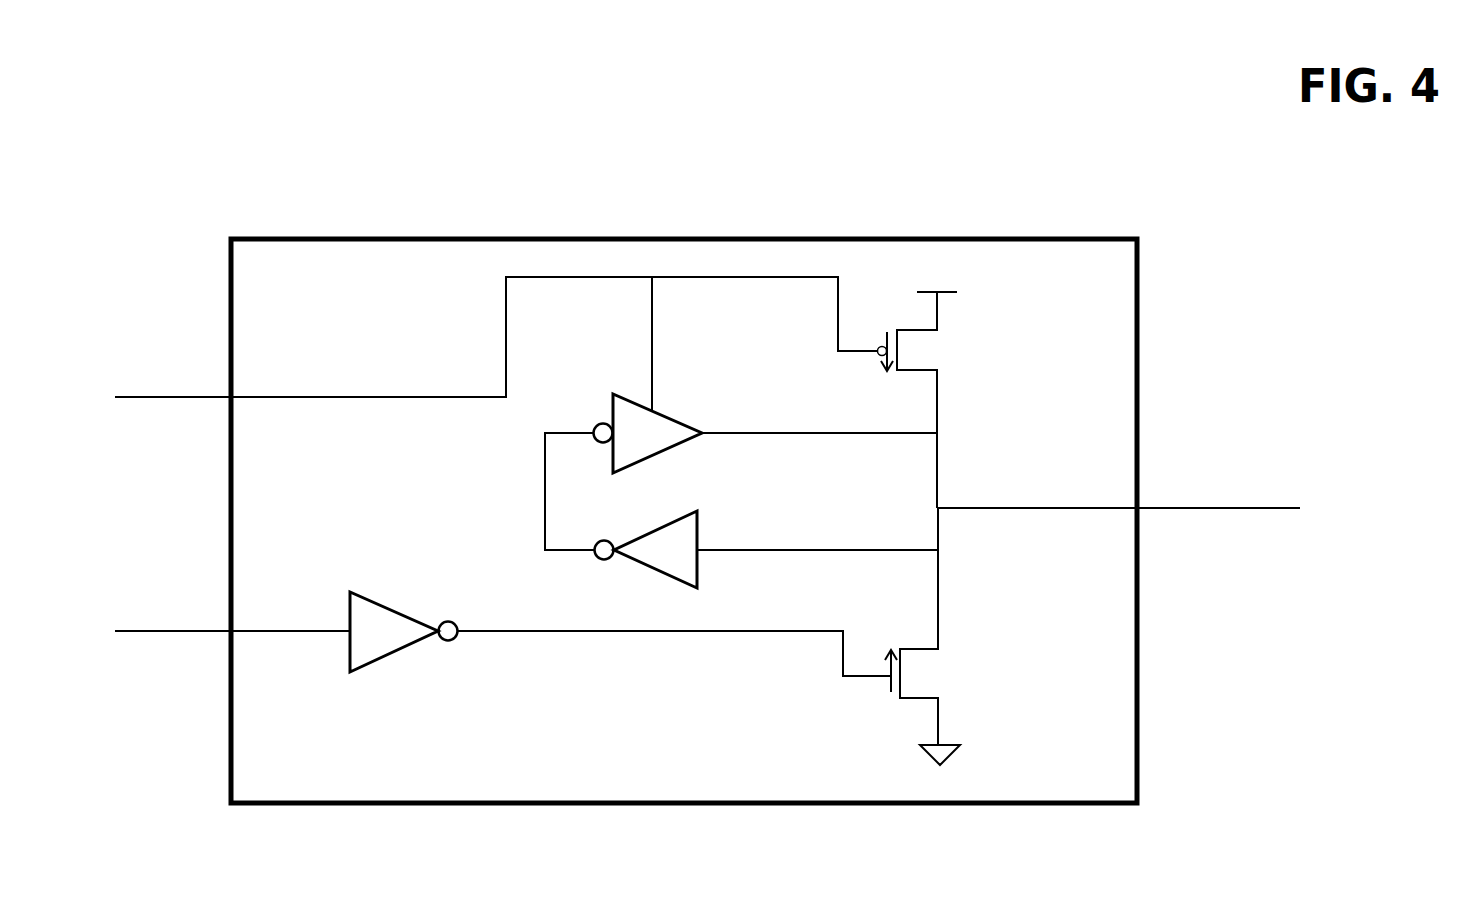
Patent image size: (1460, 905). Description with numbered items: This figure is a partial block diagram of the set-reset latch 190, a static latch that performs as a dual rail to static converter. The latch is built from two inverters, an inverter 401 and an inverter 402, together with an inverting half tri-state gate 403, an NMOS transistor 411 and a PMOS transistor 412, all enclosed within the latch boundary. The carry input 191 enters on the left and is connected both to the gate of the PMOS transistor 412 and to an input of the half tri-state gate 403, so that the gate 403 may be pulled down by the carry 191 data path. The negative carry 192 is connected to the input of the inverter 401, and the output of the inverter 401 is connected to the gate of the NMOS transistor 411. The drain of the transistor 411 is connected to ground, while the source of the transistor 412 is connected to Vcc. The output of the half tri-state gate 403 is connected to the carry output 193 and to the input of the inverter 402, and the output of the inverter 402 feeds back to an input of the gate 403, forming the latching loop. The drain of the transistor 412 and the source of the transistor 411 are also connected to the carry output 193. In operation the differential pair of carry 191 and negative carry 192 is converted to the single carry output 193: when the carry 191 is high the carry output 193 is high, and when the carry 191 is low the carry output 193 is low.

The set-reset latch 190 is at (684, 465).
The carry input 191 is at (496, 344).
The negative carry 192 is at (288, 652).
The carry output 193 is at (1119, 523).
The inverter 401 is at (620, 619).
The inverter 402 is at (741, 510).
The inverting half tri-state gate 403 is at (766, 408).
The NMOS transistor 411 is at (954, 636).
The PMOS transistor 412 is at (948, 400).